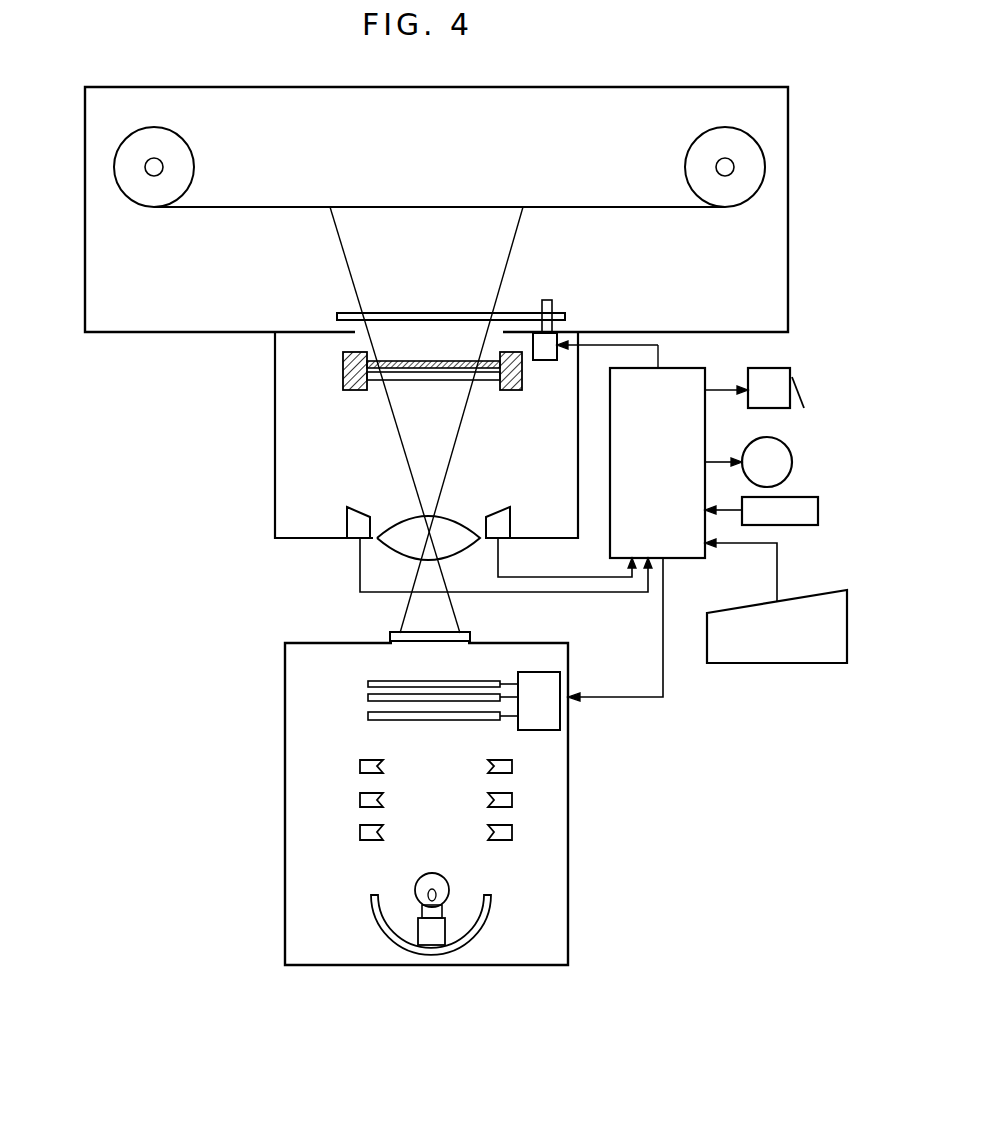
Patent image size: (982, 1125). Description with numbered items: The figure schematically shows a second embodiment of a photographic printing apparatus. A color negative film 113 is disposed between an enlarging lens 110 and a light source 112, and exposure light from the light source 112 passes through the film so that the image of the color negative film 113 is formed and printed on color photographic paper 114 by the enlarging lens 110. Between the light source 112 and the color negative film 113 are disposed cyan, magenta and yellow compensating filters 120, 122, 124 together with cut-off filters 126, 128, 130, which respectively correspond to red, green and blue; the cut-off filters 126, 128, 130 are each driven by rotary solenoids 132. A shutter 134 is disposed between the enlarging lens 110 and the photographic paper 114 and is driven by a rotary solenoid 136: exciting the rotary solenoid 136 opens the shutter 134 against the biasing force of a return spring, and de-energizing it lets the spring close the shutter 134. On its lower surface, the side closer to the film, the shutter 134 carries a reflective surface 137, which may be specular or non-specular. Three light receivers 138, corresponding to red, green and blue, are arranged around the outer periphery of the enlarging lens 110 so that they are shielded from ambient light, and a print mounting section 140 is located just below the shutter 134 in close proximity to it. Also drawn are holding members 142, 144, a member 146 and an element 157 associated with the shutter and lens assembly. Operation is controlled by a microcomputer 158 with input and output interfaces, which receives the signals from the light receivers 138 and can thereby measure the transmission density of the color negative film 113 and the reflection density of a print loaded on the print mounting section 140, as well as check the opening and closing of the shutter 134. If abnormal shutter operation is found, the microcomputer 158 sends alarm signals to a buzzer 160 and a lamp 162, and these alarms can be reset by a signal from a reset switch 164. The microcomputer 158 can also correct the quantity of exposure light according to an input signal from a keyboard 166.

The enlarging lens 110 is at (455, 517).
The light source 112 is at (449, 882).
The color negative film 113 is at (470, 633).
The color photographic paper 114 is at (567, 207).
The cyan compensating filter 120 is at (512, 832).
The magenta compensating filter 122 is at (512, 799).
The yellow compensating filter 124 is at (512, 766).
The cut-off filter 126 is at (368, 717).
The cut-off filter 128 is at (368, 698).
The cut-off filter 130 is at (368, 683).
The rotary solenoid 132 is at (563, 720).
The shutter 134 is at (432, 313).
The rotary solenoid 136 is at (545, 361).
The reflective surface 137 is at (370, 342).
The light receiver 138 is at (357, 507).
The print mounting section 140 is at (337, 381).
The holder 142 is at (357, 392).
The holder 144 is at (510, 392).
The filter 146 is at (436, 381).
The switch 157 is at (587, 330).
The microcomputer 158 is at (688, 368).
The buzzer 160 is at (783, 368).
The lamp 162 is at (792, 462).
The reset switch 164 is at (818, 512).
The keyboard 166 is at (765, 665).